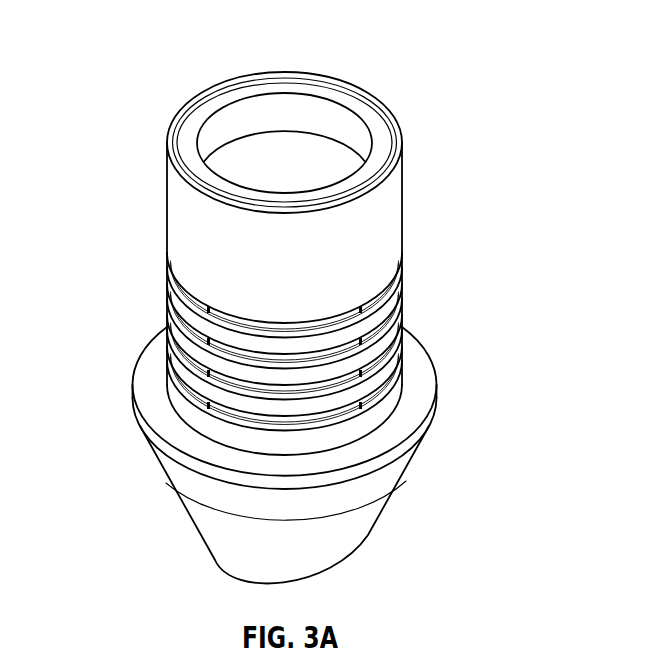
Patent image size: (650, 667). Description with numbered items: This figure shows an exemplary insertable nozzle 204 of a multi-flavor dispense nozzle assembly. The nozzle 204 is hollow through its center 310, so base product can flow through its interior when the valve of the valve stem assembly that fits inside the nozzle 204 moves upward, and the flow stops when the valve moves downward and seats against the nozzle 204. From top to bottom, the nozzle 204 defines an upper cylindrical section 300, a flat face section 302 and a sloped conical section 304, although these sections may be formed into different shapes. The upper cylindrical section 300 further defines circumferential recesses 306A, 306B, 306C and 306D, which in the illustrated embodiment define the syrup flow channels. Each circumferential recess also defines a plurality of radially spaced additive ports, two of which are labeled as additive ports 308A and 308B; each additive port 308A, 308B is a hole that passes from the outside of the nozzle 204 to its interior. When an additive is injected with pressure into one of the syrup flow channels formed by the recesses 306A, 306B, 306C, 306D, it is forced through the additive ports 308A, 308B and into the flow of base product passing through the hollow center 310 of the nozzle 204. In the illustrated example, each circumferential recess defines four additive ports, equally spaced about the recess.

The insertable nozzle 204 is at (130, 51).
The upper cylindrical section 300 is at (385, 183).
The flat face section 302 is at (413, 440).
The sloped conical section 304 is at (356, 523).
The circumferential recess 306A is at (340, 350).
The circumferential recess 306B is at (348, 362).
The circumferential recess 306C is at (236, 386).
The circumferential recess 306D is at (258, 423).
The additive port 308A is at (208, 312).
The additive port 308B is at (362, 312).
The center 310 is at (270, 145).